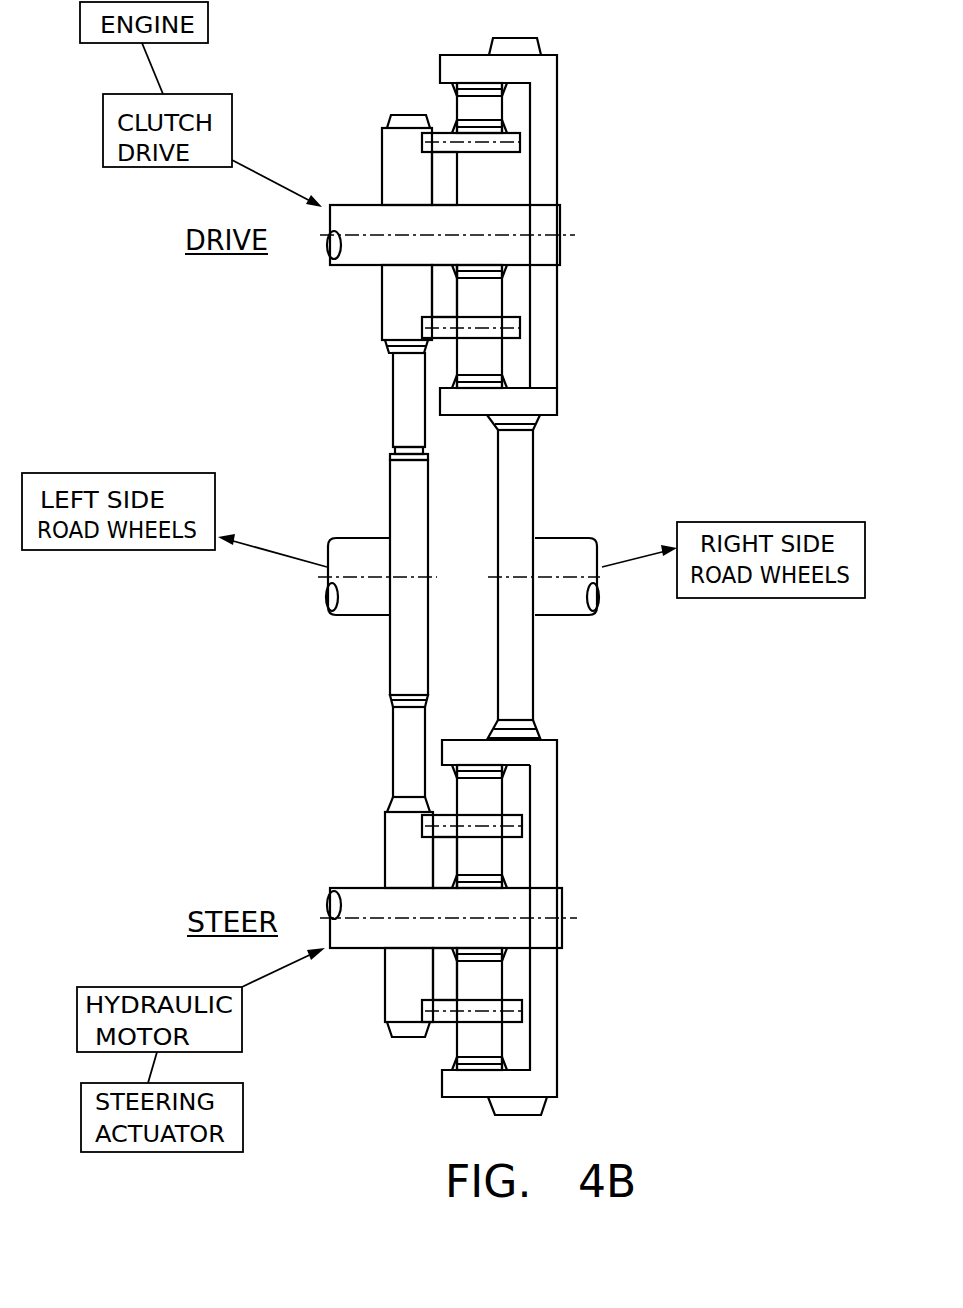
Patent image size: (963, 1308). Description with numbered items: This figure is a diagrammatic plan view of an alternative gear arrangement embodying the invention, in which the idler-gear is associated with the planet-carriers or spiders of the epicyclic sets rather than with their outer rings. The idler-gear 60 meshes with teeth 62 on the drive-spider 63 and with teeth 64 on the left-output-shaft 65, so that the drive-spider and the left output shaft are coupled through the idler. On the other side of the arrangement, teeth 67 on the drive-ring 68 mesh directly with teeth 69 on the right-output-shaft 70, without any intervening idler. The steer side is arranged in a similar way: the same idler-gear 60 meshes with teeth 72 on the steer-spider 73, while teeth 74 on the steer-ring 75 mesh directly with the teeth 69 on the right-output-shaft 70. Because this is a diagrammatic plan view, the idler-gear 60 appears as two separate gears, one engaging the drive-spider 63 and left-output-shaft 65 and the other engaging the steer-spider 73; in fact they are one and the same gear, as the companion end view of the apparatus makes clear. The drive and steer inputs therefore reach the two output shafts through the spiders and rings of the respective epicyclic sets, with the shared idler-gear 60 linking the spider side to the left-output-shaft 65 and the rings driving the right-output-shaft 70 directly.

The idler-gear 60 is at (403, 405).
The teeth on the drive-spider 62 is at (398, 338).
The drive-spider 63 is at (395, 170).
The teeth on the left-output-shaft 64 is at (396, 458).
The left-output-shaft 65 is at (357, 560).
The teeth on the drive-ring 67 is at (540, 412).
The drive-ring 68 is at (540, 120).
The teeth on the right-output-shaft 69 is at (530, 435).
The right-output-shaft 70 is at (565, 557).
The teeth on the steer-spider 72 is at (388, 812).
The steer-spider 73 is at (402, 982).
The teeth on the steer-ring 74 is at (530, 735).
The steer-ring 75 is at (547, 835).